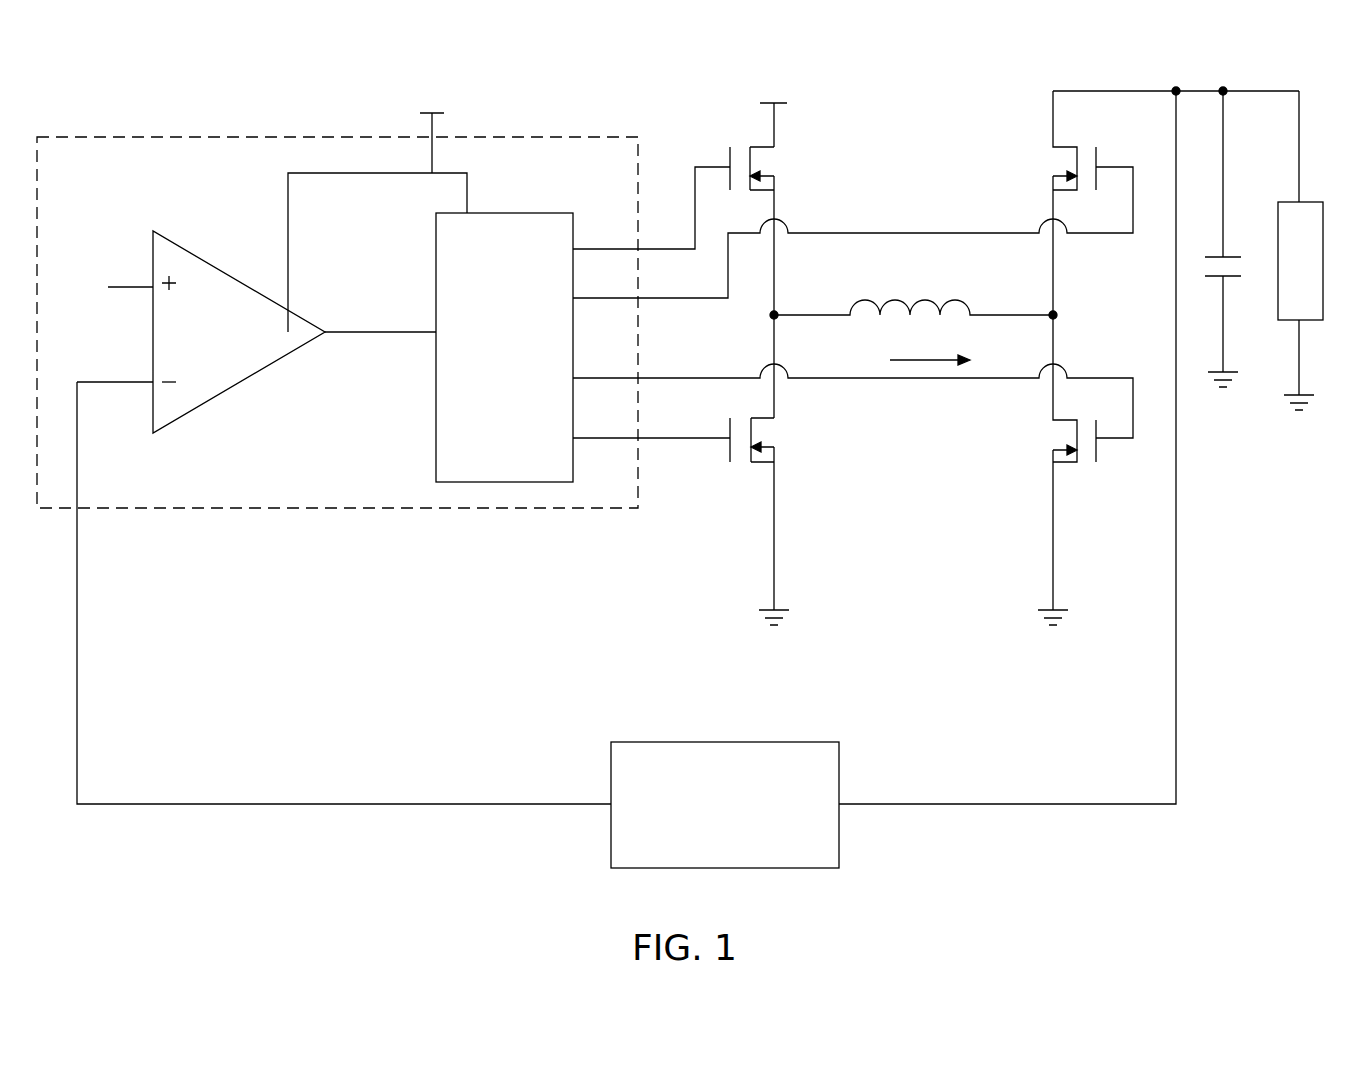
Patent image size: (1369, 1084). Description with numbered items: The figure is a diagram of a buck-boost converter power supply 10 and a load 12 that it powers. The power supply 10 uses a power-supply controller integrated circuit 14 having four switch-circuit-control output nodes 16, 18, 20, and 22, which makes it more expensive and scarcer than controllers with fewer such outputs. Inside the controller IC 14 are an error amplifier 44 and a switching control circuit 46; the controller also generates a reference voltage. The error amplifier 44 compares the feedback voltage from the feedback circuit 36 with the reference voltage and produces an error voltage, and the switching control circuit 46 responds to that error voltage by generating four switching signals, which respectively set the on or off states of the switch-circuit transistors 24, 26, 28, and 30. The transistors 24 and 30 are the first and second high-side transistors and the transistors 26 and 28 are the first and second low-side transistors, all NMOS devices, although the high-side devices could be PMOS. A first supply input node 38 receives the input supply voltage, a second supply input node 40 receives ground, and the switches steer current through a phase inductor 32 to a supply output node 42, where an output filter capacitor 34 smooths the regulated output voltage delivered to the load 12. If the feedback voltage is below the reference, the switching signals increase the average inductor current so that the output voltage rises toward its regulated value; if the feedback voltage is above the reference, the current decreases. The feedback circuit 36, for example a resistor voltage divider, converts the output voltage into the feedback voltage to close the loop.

The buck-boost converter power supply 10 is at (151, 877).
The load 12 is at (1316, 201).
The power-supply controller integrated circuit 14 is at (185, 137).
The switch-circuit-control output node 16 is at (573, 249).
The switch-circuit-control output node 18 is at (573, 298).
The switch-circuit-control output node 20 is at (573, 378).
The switch-circuit-control output node 22 is at (573, 438).
The first high-side transistor 24 is at (728, 160).
The first low-side transistor 26 is at (730, 455).
The second low-side transistor 28 is at (1096, 462).
The second high-side transistor 30 is at (1097, 160).
The phase inductor 32 is at (926, 300).
The output filter capacitor 34 is at (1224, 257).
The feedback circuit 36 is at (725, 742).
The first supply input node 38 is at (774, 128).
The second supply input node 40 is at (774, 557).
The supply output node 42 is at (1244, 91).
The error amplifier 44 is at (200, 255).
The switching control circuit 46 is at (436, 419).